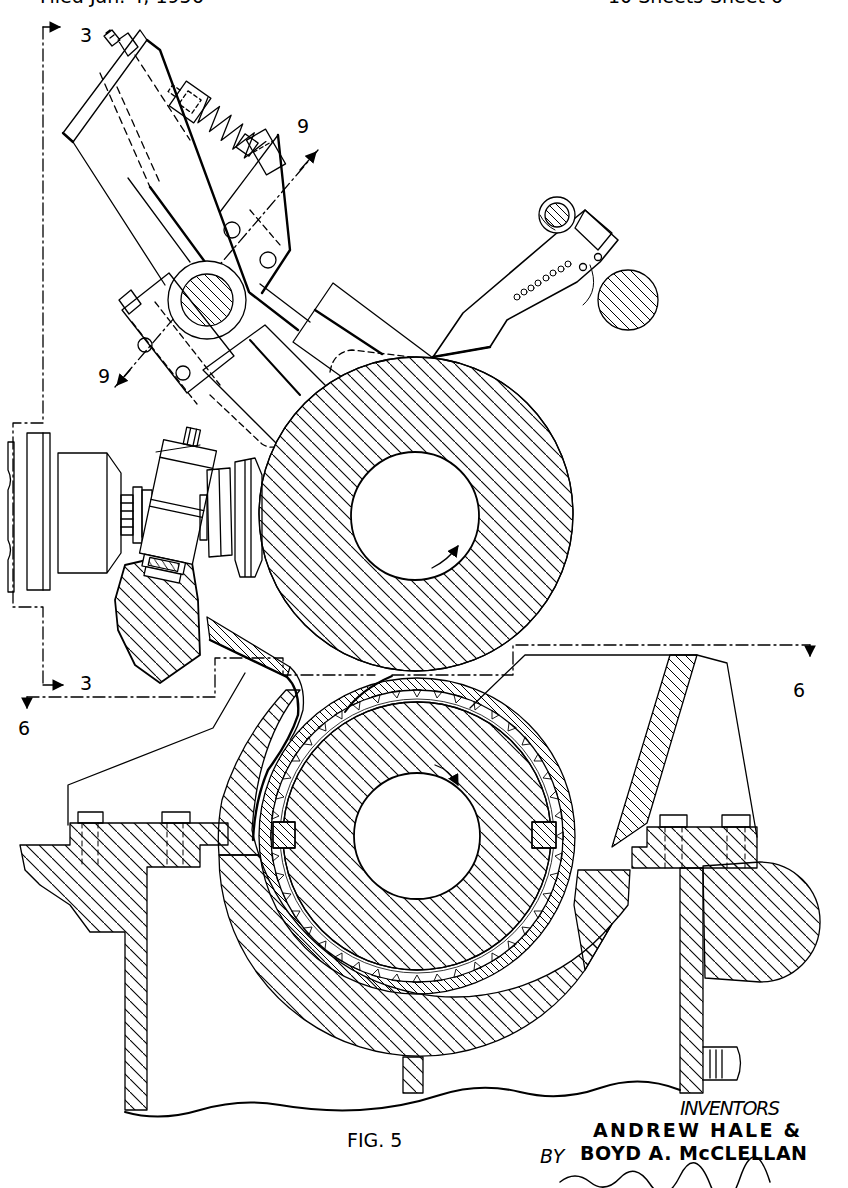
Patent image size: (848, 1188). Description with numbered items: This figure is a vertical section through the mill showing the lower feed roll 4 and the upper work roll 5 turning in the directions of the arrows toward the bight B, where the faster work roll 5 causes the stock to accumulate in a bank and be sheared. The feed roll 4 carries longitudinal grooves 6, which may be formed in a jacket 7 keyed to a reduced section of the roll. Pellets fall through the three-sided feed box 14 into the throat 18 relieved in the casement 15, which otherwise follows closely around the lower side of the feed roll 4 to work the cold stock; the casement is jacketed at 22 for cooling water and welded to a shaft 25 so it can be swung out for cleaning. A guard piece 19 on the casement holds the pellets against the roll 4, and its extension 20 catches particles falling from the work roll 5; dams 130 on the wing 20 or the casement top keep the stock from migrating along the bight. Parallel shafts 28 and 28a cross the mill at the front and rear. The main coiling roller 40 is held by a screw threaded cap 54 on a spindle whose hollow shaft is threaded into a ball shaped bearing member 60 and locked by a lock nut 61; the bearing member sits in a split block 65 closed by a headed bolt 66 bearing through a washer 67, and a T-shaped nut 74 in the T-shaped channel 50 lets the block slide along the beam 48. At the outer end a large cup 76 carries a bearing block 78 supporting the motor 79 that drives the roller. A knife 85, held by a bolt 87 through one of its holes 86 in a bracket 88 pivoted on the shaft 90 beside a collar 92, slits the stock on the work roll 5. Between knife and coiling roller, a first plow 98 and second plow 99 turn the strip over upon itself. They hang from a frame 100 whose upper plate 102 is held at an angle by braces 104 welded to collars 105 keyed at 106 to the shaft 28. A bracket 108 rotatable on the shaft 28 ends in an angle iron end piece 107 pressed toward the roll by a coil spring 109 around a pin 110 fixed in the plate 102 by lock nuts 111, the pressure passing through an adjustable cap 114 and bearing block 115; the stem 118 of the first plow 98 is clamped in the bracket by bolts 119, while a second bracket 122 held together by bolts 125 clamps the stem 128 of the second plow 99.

The feed roll 4 is at (493, 740).
The work roll 5 is at (570, 522).
The longitudinal grooves 6 is at (535, 748).
The jacket 7 is at (550, 782).
The feed box 14 is at (663, 752).
The casement 15 is at (577, 977).
The relieved throat 18 is at (590, 873).
The guard piece 19 is at (245, 772).
The extension 20 is at (245, 673).
The jacket 22 is at (665, 1038).
The shaft 25 is at (768, 977).
The shaft 28 is at (217, 300).
The shaft 28a is at (640, 292).
The main coiling roller 40 is at (240, 565).
The beam 48 is at (123, 625).
The T-shaped channel 50 is at (180, 570).
The screw threaded cap 54 is at (233, 457).
The ball shaped bearing member 60 is at (150, 490).
The lock nut 61 is at (136, 538).
The split block 65 is at (160, 482).
The headed bolt 66 is at (198, 437).
The washer 67 is at (175, 455).
The T-shaped nut 74 is at (175, 585).
The cup 76 is at (78, 568).
The bearing block 78 is at (45, 440).
The motor 79 is at (17, 491).
The knife 85 is at (495, 330).
The holes 86 is at (536, 284).
The bolt 87 is at (583, 305).
The bracket 88 is at (605, 256).
The shaft 90 is at (565, 210).
The collar 92 is at (540, 215).
The first plow 98 is at (360, 318).
The second plow 99 is at (272, 345).
The frame 100 is at (163, 46).
The upper plate 102 is at (105, 83).
The braces 104 is at (135, 232).
The collars 105 is at (277, 256).
The key 106 is at (200, 268).
The angle iron end piece 107 is at (278, 208).
The bracket 108 is at (272, 305).
The coil spring 109 is at (218, 118).
The pin 110 is at (252, 140).
The lock nuts 111 is at (138, 40).
The adjustable cap 114 is at (199, 85).
The bearing block 115 is at (268, 142).
The stem 118 is at (332, 312).
The bolts 119 is at (238, 228).
The second bracket 122 is at (225, 352).
The bolts 125 is at (138, 345).
The stem 128 is at (122, 300).
The dams 130 is at (235, 624).
The bight B is at (375, 668).